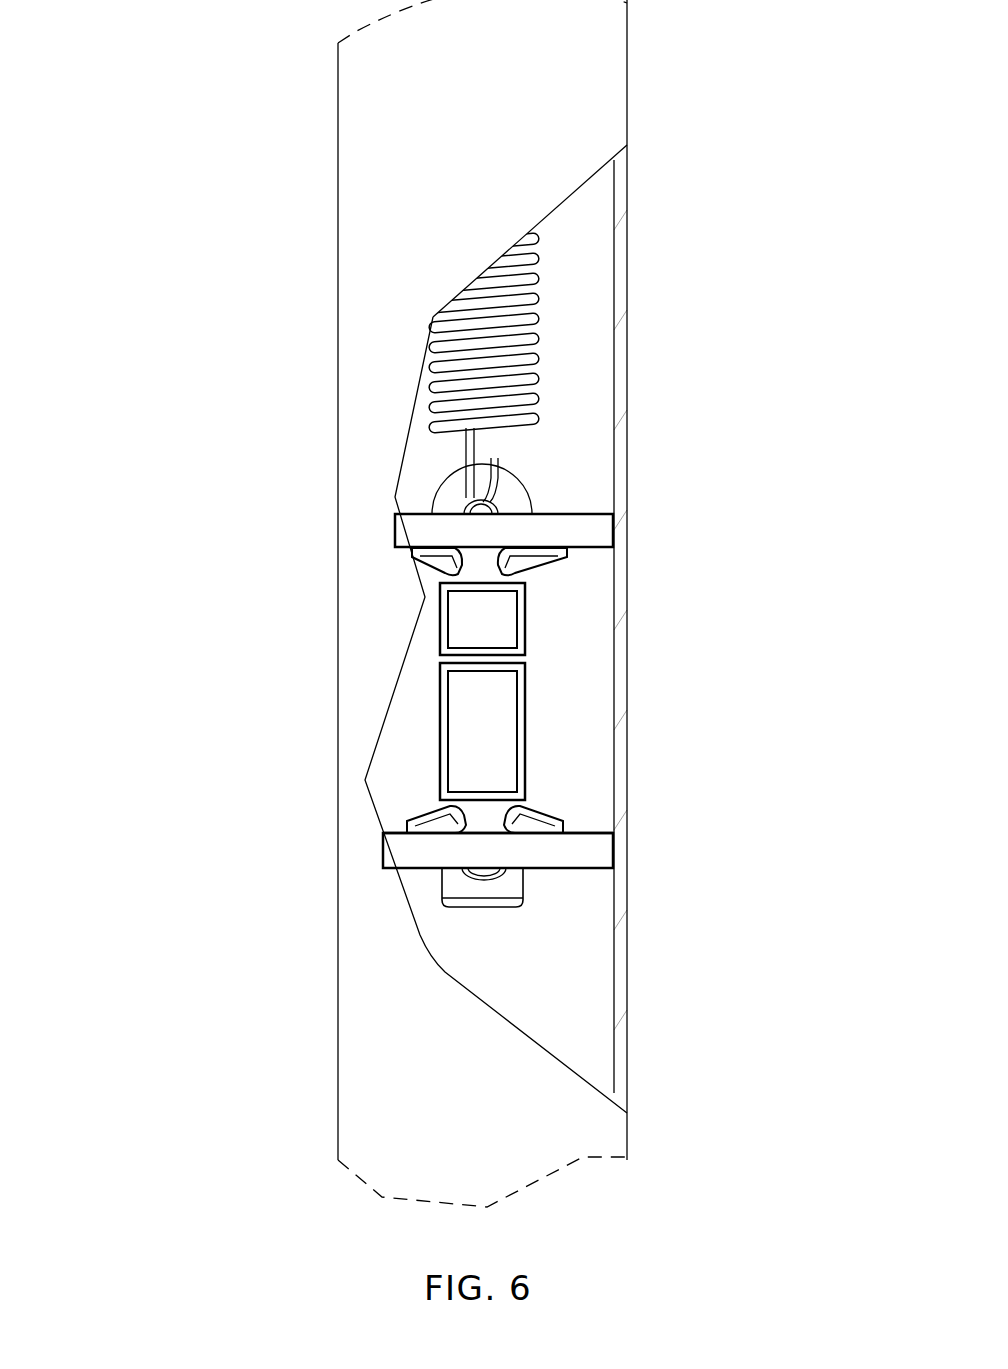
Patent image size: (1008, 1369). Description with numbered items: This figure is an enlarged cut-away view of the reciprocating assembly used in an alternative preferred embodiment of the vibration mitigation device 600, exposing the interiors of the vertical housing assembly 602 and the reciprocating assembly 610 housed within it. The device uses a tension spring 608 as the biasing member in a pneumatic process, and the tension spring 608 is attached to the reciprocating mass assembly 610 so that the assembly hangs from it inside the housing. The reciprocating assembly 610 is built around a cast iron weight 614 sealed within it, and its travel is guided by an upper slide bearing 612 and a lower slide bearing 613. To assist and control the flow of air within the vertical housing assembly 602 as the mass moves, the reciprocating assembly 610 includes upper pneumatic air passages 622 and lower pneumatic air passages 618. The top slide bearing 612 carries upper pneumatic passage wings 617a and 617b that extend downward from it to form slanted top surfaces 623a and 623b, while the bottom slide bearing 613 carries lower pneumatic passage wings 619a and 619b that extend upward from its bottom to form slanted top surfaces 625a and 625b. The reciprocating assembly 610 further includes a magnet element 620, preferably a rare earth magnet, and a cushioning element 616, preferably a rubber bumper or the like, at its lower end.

The vibration mitigation device 600 is at (511, 603).
The vertical housing assembly 602 is at (362, 913).
The tension spring 608 is at (435, 335).
The reciprocating assembly 610 is at (605, 573).
The upper slide bearing 612 is at (547, 512).
The lower slide bearing 613 is at (567, 857).
The cast iron weight 614 is at (585, 727).
The cushioning element 616 is at (510, 915).
The upper pneumatic passage wing 617a is at (437, 558).
The upper pneumatic passage wing 617b is at (573, 548).
The lower pneumatic air passages 618 is at (455, 838).
The lower pneumatic passage wing 619a is at (440, 818).
The lower pneumatic passage wing 619b is at (528, 822).
The magnet element 620 is at (473, 690).
The upper pneumatic air passages 622 is at (488, 522).
The slanted top surface 623a is at (450, 560).
The slanted top surface 623b is at (548, 567).
The slanted top surface 625a is at (443, 810).
The slanted top surface 625b is at (510, 808).